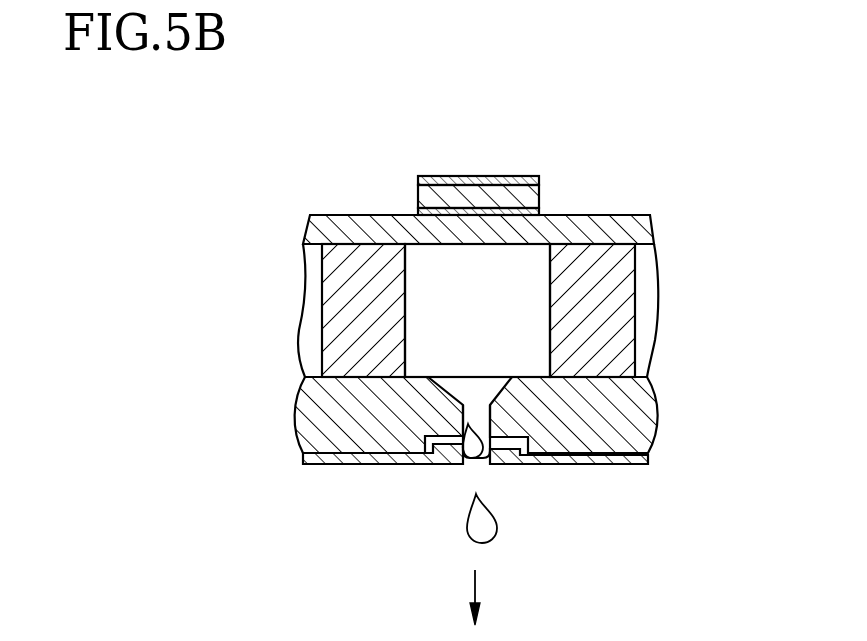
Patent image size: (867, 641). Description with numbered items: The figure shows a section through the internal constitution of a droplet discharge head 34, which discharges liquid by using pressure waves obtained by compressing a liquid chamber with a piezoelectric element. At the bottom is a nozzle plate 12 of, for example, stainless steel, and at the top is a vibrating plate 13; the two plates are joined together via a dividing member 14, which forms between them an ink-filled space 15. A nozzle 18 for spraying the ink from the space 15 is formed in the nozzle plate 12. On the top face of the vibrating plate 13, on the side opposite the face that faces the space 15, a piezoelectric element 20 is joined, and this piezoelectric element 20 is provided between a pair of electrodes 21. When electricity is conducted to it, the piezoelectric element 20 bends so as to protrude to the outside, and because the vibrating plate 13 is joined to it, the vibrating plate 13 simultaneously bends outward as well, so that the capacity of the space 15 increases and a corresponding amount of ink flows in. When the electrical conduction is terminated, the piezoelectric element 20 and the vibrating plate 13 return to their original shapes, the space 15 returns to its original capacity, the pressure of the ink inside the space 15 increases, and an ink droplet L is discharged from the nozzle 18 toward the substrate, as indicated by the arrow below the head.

The nozzle plate 12 is at (638, 418).
The vibrating plate 13 is at (308, 217).
The dividing member 14 is at (327, 325).
The space 15 is at (528, 292).
The nozzle 18 is at (472, 458).
The piezoelectric element 20 is at (539, 192).
The electrodes 21 is at (460, 176).
The droplet discharge head 34 is at (479, 128).
The ink droplet L is at (483, 522).